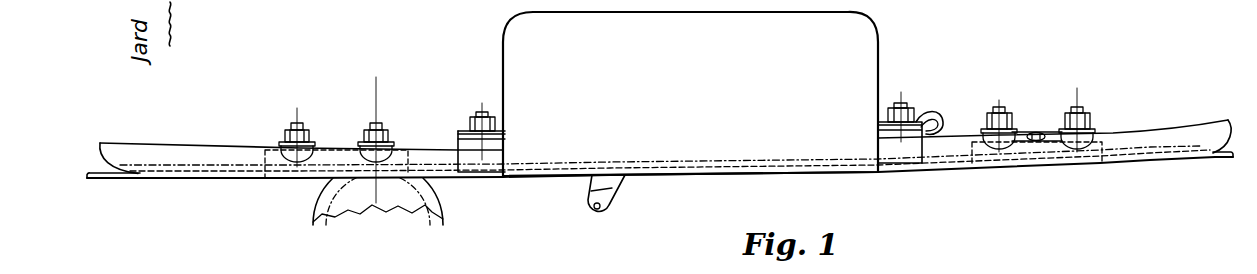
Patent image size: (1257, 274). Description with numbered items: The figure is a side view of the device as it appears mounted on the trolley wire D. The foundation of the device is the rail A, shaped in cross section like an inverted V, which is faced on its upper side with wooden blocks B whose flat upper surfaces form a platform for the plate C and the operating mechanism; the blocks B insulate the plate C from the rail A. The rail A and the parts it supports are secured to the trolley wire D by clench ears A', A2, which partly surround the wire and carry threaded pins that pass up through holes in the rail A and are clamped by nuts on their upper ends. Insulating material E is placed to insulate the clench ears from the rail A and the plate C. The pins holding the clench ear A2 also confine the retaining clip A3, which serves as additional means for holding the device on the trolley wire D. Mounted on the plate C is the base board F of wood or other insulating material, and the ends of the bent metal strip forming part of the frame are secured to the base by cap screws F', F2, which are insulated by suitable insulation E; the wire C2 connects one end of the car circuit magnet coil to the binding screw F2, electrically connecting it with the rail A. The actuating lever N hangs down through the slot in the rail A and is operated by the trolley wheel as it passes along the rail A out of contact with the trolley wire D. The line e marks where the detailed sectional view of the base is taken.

The rail A is at (665, 131).
The clench ear A' is at (323, 192).
The clench ear A2 is at (1033, 158).
The retaining clip A3 is at (1017, 128).
The wooden block B is at (481, 151).
The plate C is at (457, 138).
The wire C2 is at (930, 113).
The trolley wire D is at (109, 179).
The insulating material E is at (287, 141).
The base board F is at (458, 109).
The cap screw F' is at (482, 120).
The cap screw F2 is at (907, 106).
The actuating lever N is at (614, 196).
The section line e is at (378, 143).